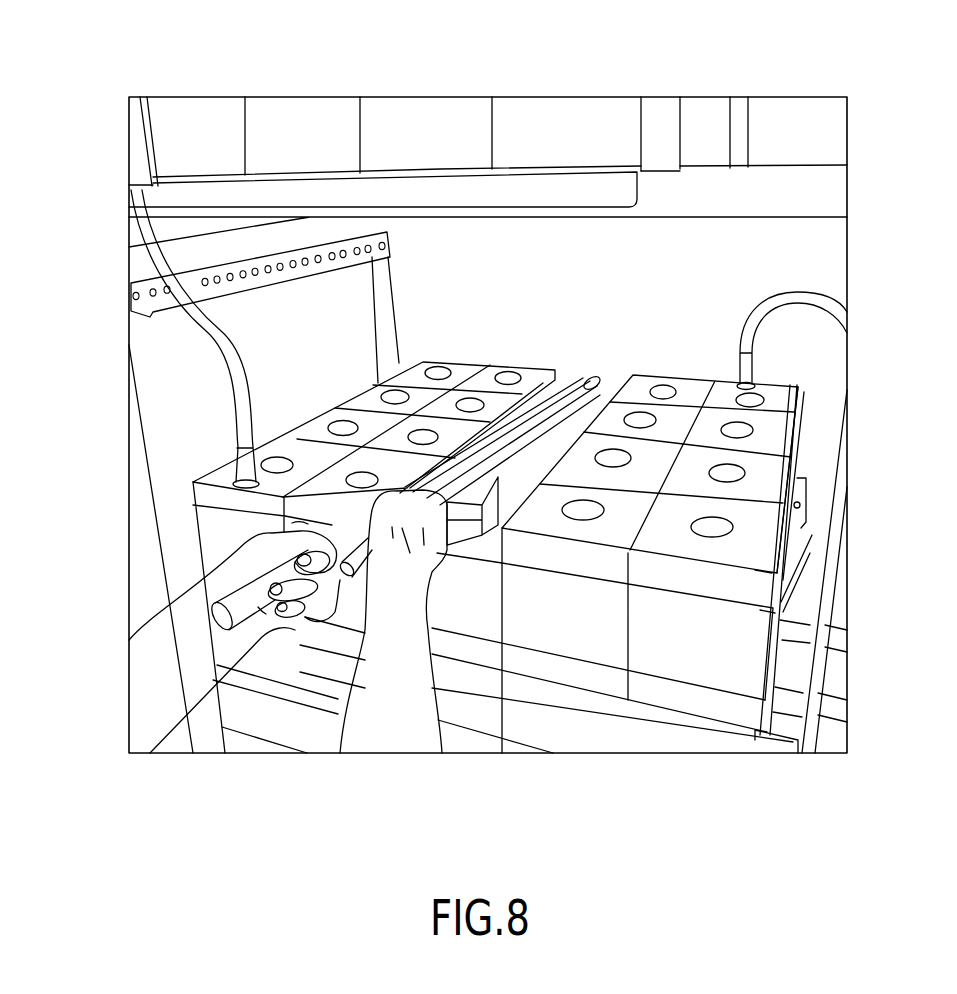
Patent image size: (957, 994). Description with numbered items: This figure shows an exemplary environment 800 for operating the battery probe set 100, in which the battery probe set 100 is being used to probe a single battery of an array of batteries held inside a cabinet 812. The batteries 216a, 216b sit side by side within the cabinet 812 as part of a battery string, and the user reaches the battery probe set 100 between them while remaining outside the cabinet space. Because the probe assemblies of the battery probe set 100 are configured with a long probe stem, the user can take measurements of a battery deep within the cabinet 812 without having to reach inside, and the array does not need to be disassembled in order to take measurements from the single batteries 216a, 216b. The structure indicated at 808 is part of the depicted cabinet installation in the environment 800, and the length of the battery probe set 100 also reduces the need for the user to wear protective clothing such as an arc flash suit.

The environment 800 is at (488, 425).
The cabinet 812 is at (155, 388).
The battery probe set 100 is at (213, 627).
The battery 216a is at (568, 647).
The battery 216b is at (692, 667).
The rack frame 808 is at (858, 385).